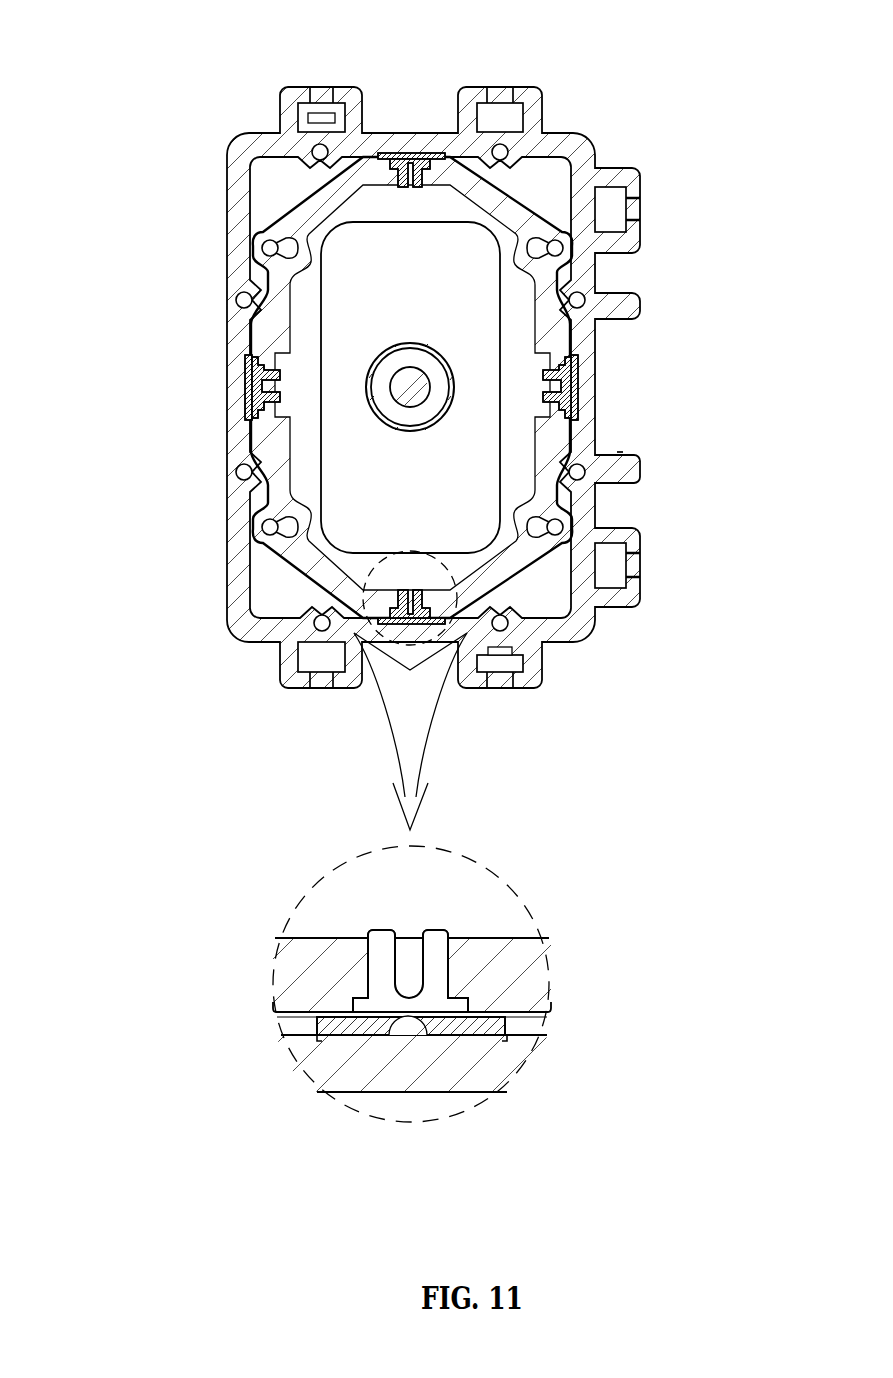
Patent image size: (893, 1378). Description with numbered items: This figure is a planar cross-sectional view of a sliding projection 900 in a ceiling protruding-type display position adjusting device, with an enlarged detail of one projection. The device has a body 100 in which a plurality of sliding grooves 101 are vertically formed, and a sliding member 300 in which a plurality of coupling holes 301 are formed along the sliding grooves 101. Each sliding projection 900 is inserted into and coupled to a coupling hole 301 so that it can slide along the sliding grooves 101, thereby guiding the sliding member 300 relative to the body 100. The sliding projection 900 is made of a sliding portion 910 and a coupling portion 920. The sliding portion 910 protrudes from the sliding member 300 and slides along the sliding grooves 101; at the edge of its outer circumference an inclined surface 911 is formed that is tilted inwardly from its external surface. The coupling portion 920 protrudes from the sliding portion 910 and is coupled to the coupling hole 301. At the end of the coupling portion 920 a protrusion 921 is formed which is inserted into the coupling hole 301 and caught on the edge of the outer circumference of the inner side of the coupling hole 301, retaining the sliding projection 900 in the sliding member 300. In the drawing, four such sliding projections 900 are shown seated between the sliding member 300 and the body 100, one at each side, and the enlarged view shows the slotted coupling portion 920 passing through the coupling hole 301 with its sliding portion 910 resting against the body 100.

The body 100 is at (237, 255).
The sliding groove 101 is at (400, 1022).
The sliding member 300 is at (290, 222).
The coupling hole 301 is at (389, 972).
The sliding projection 900 is at (409, 568).
The sliding portion 910 is at (503, 1025).
The inclined surface 911 is at (318, 1040).
The coupling portion 920 is at (440, 965).
The protrusion 921 is at (370, 934).